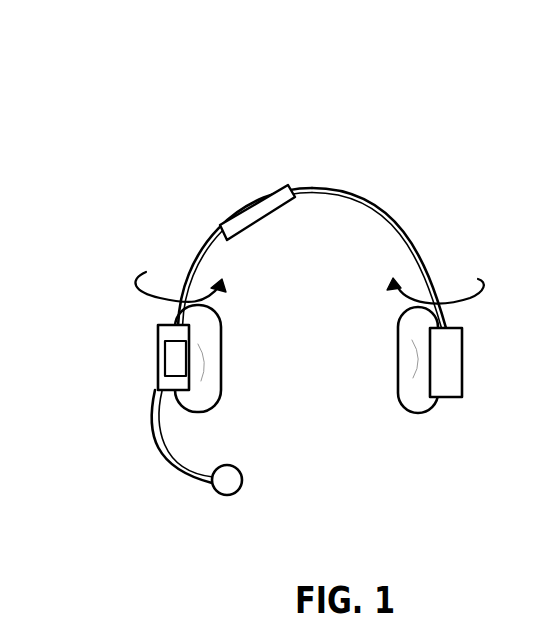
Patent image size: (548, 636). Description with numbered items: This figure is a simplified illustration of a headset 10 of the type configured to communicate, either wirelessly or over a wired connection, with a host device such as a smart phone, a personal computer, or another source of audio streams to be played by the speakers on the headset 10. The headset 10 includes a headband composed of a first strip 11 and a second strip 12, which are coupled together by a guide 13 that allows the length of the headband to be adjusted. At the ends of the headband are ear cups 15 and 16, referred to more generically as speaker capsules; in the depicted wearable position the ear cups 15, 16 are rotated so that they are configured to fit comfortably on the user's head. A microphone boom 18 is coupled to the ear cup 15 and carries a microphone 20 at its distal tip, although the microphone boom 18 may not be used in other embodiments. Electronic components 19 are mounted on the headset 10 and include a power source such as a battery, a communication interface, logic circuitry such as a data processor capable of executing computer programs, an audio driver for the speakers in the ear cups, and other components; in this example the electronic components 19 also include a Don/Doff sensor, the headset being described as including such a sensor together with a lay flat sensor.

The headset 10 is at (294, 129).
The first strip 11 is at (183, 268).
The second strip 12 is at (425, 258).
The guide 13 is at (277, 190).
The ear cup 15 is at (208, 388).
The ear cup 16 is at (412, 397).
The microphone boom 18 is at (173, 458).
The electronic components 19 is at (178, 370).
The microphone 20 is at (243, 479).